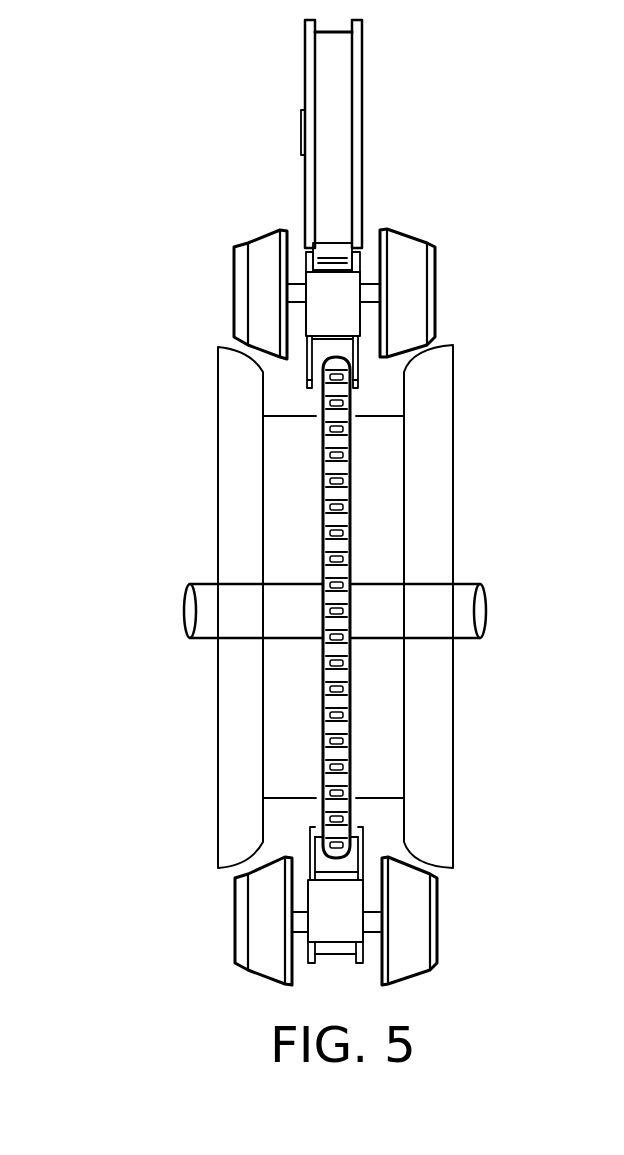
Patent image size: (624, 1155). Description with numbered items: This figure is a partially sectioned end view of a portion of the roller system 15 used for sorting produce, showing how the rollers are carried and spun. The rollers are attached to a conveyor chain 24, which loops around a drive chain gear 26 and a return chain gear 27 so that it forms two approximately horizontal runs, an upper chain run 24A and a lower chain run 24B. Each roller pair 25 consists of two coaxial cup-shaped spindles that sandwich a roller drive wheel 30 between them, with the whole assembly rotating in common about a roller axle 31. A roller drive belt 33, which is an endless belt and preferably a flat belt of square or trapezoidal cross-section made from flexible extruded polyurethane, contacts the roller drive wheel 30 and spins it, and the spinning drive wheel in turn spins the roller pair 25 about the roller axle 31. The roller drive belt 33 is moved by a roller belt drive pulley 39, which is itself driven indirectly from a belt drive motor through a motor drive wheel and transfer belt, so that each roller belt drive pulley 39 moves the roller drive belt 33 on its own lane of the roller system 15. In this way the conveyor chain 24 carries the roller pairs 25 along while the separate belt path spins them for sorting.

The roller system 15 is at (130, 162).
The conveyor chain 24 is at (310, 363).
The upper chain run 24A is at (360, 365).
The lower chain run 24B is at (360, 857).
The roller pair 25 is at (263, 313).
The drive chain gear 26 is at (323, 682).
The return chain gear 27 is at (402, 243).
The roller drive wheel 30 is at (337, 266).
The roller axle 31 is at (300, 293).
The roller drive belt 33 is at (327, 250).
The roller belt drive pulley 39 is at (363, 125).